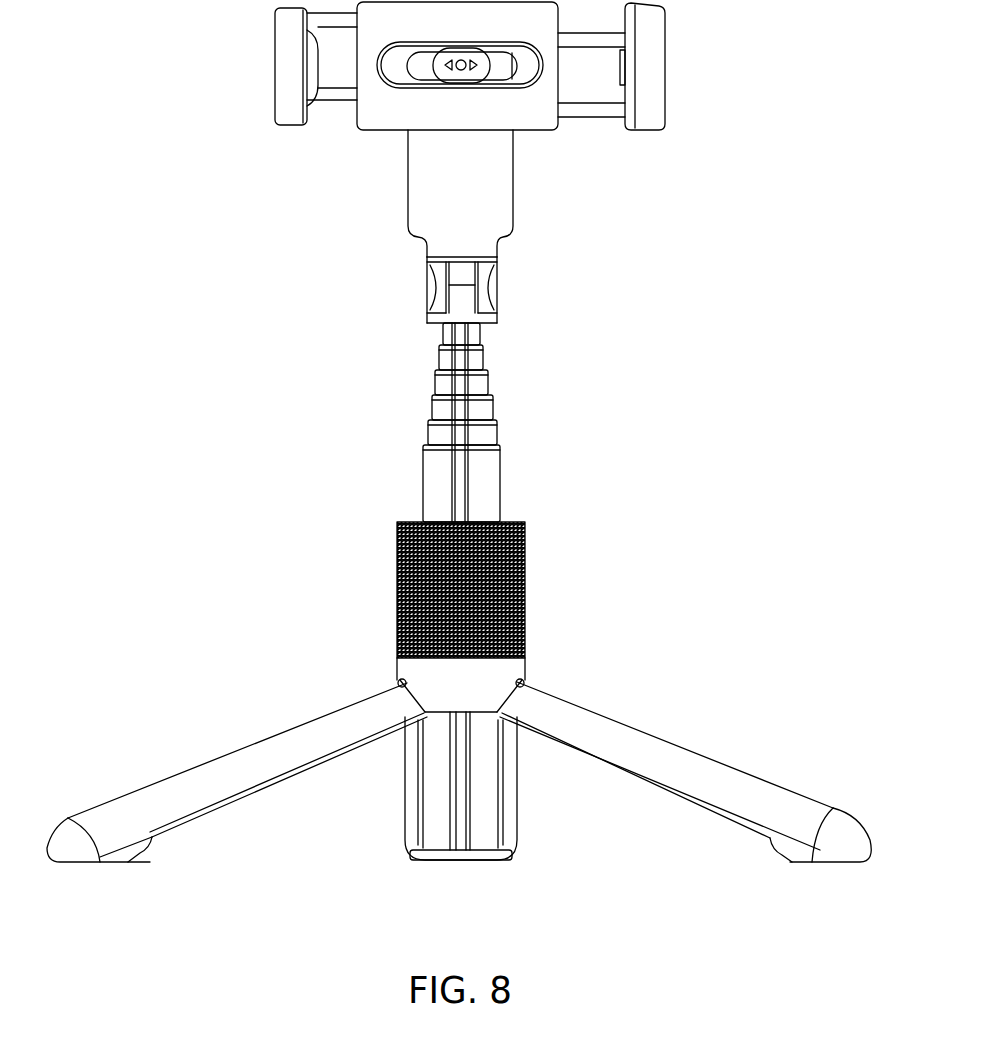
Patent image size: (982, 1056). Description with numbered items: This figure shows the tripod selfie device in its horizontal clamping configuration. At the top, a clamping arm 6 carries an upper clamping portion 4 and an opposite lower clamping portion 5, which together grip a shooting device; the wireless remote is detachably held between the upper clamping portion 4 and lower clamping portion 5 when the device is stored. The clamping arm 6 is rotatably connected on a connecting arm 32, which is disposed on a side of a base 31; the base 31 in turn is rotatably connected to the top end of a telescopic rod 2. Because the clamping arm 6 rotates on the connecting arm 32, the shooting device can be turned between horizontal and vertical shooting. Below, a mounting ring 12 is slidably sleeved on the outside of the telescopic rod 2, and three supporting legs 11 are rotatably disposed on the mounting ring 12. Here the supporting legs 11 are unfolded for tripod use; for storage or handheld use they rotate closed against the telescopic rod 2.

The telescopic rod 2 is at (443, 492).
The upper clamping portion 4 is at (295, 62).
The lower clamping portion 5 is at (645, 108).
The clamping arm 6 is at (402, 100).
The supporting legs 11 is at (280, 757).
The mounting ring 12 is at (397, 617).
The base 31 is at (490, 283).
The connecting arm 32 is at (493, 190).